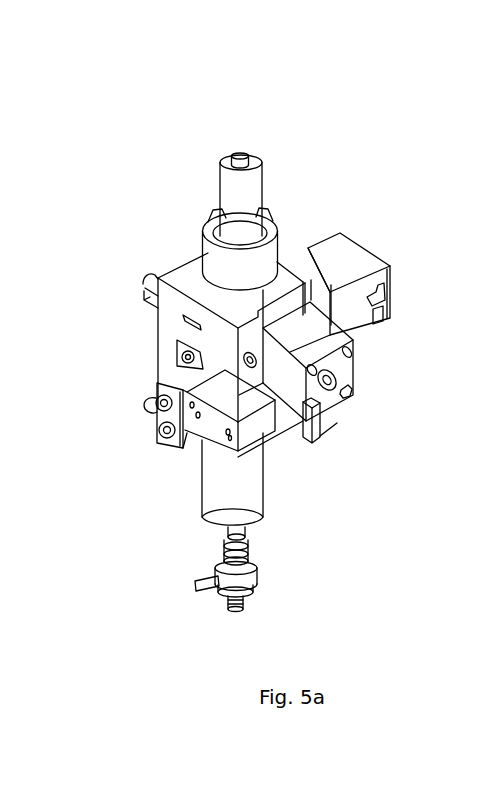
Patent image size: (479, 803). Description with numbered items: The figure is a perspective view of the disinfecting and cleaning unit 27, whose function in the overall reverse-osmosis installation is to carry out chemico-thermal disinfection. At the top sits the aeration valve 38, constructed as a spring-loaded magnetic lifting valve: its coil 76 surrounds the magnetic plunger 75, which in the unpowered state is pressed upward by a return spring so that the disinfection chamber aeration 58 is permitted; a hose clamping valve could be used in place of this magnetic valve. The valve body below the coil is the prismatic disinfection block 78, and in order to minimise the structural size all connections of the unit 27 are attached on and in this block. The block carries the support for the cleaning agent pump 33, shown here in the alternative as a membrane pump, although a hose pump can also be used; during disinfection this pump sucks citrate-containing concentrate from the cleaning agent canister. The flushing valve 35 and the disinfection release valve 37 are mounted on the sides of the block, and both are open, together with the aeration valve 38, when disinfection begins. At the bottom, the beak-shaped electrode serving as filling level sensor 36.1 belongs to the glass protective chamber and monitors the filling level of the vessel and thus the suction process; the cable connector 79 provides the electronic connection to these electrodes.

The disinfecting and cleaning unit 27 is at (323, 188).
The cleaning agent pump 33 is at (183, 448).
The flushing valve 35 is at (363, 253).
The filling level sensor 36.1 is at (252, 580).
The disinfection release valve 37 is at (360, 390).
The aeration valve 38 is at (202, 233).
The disinfection chamber aeration 58 is at (182, 315).
The magnetic plunger 75 is at (239, 153).
The coil 76 is at (245, 192).
The disinfection block 78 is at (145, 298).
The cable connector 79 is at (193, 592).